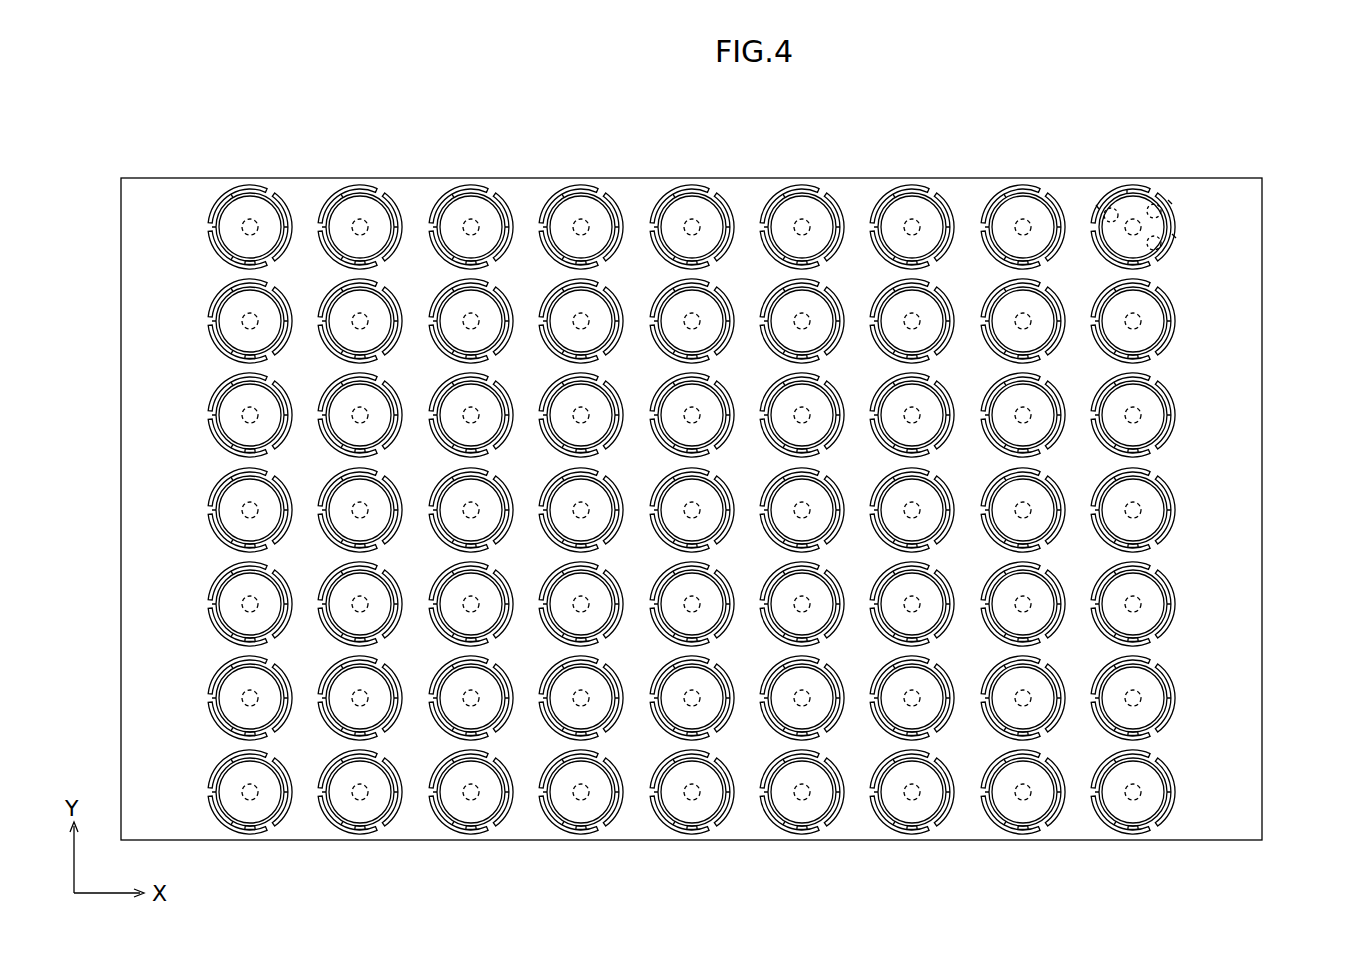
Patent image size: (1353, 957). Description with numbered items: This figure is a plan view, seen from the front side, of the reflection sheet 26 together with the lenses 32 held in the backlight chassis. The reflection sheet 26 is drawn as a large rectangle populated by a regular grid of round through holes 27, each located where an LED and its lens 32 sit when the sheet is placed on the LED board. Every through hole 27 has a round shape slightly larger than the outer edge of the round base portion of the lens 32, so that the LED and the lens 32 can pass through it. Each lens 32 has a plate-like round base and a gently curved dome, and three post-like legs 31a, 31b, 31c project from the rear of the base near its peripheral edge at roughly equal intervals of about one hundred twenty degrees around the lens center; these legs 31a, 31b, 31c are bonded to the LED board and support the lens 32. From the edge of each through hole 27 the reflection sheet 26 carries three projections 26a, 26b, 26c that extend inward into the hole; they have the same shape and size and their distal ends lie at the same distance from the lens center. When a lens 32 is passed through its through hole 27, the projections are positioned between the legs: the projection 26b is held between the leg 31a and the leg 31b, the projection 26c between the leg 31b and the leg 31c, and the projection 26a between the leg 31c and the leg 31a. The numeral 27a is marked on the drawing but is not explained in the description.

The reflection sheet 26 is at (1237, 427).
The projection 26a is at (1170, 202).
The projection 26b is at (1174, 236).
The projection 26c is at (1098, 205).
The through hole 27 is at (1172, 212).
The ring member projection 27a is at (1127, 186).
The leg 31a is at (1175, 222).
The leg 31b is at (1118, 268).
The leg 31c is at (1110, 207).
The lens 32 is at (1135, 212).